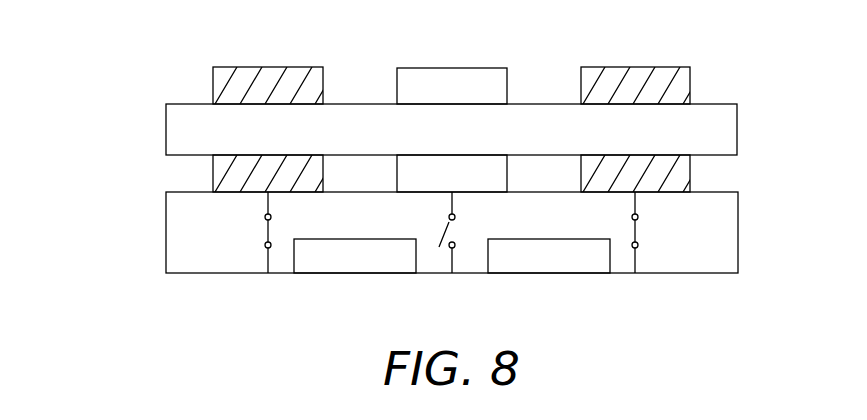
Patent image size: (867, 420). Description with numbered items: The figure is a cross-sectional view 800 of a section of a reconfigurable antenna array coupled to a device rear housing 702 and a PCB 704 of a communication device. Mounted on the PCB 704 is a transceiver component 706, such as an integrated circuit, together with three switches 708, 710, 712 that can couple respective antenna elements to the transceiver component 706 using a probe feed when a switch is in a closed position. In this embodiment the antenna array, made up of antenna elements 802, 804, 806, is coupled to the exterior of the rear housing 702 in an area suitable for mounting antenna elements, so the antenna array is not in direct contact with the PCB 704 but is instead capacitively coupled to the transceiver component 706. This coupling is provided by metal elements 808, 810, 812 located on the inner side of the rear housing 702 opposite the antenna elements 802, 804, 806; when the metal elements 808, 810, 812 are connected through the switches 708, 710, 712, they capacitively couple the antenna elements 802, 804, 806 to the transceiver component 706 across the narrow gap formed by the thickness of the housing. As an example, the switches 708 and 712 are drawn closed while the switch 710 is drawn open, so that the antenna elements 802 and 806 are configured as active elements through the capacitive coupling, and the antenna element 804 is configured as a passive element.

The cross-sectional view 800 is at (108, 83).
The device rear housing 702 is at (718, 104).
The PCB 704 is at (739, 232).
The transceiver component 706 is at (355, 266).
The switch 708 is at (266, 214).
The switch 710 is at (457, 212).
The switch 712 is at (638, 213).
The antenna element 802 is at (268, 67).
The antenna element 804 is at (452, 68).
The antenna element 806 is at (635, 67).
The metal element 808 is at (213, 172).
The metal element 810 is at (488, 173).
The metal element 812 is at (690, 173).